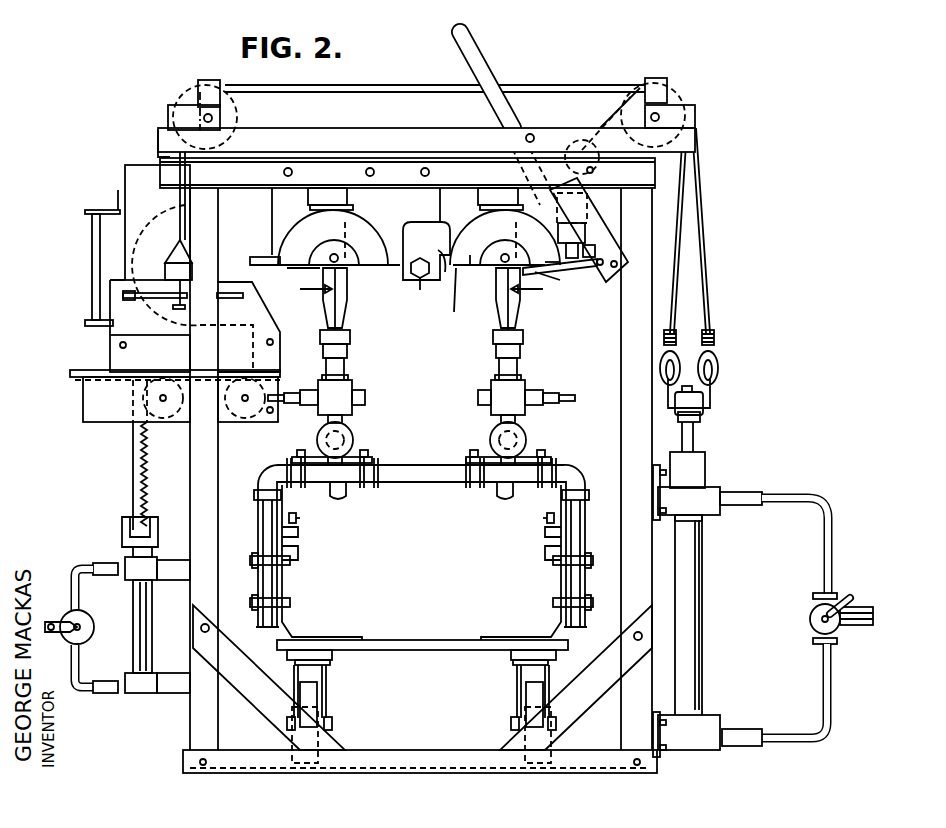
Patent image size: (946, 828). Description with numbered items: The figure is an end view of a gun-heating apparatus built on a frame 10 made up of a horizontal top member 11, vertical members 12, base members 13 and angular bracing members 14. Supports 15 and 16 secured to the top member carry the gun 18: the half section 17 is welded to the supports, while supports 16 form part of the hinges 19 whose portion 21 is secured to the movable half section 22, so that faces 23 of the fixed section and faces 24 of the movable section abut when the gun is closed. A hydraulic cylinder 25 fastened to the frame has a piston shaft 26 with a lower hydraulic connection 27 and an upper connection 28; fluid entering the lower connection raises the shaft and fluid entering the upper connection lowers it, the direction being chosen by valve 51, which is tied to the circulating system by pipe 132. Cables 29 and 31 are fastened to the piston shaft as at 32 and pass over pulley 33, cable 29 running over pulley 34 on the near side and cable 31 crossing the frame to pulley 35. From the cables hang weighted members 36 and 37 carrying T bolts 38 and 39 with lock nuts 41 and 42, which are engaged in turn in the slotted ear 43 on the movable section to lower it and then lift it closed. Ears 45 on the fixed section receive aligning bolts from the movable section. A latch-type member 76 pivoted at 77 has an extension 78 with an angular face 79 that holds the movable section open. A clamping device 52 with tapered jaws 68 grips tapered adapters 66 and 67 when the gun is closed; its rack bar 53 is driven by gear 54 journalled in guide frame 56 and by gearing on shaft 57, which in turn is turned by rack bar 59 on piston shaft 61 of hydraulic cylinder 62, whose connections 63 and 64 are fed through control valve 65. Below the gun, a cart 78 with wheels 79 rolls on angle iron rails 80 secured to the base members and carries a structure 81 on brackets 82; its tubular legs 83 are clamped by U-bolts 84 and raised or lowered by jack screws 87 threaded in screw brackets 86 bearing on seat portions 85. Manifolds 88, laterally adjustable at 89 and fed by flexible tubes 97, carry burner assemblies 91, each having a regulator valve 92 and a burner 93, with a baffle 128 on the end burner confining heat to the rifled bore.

The frame 10 is at (152, 131).
The horizontal top member 11 is at (454, 132).
The vertical members 12 is at (192, 478).
The base members 13 is at (412, 757).
The angular bracing members 14 is at (272, 700).
The supports 15 is at (297, 200).
The supports 16 is at (437, 204).
The half section 17 is at (295, 238).
The gun 18 is at (383, 226).
The hinges 19 is at (420, 284).
The hinge portion 21 is at (446, 270).
The half section 22 is at (518, 218).
The faces 23 is at (300, 272).
The faces 24 is at (480, 265).
The hydraulic cylinder 25 is at (703, 610).
The piston shaft 26 is at (700, 483).
The lower hydraulic connection 27 is at (780, 736).
The upper hydraulic connection 28 is at (786, 495).
The cable 29 is at (715, 352).
The cable 31 is at (282, 90).
The cable fastening 32 is at (705, 410).
The pulley 33 is at (690, 92).
The pulley 34 is at (592, 170).
The pulley 35 is at (197, 92).
The weighted member 36 is at (568, 225).
The weighted member 37 is at (165, 270).
The T bolt 38 is at (557, 263).
The T bolt 39 is at (160, 297).
The lock nut 41 is at (608, 280).
The lock nut 42 is at (180, 308).
The slotted ear 43 is at (585, 252).
The ears 45 is at (252, 261).
The valve 51 is at (812, 610).
The clamping device 52 is at (128, 166).
The rack bar 53 is at (72, 372).
The gear 54 is at (275, 378).
The guide frame 56 is at (118, 323).
The shaft 57 is at (148, 400).
The rack bar 59 is at (132, 466).
The piston shaft 61 is at (123, 540).
The hydraulic cylinder 62 is at (132, 612).
The inlet connection 63 is at (78, 564).
The outlet connection 64 is at (80, 690).
The control valve 65 is at (92, 636).
The tapered adapter 66 is at (345, 200).
The tapered adapter 67 is at (500, 188).
The tapered jaw 68 is at (228, 230).
The latch-type member 76 is at (490, 56).
The pivot 77 is at (533, 134).
The cart or dolly 78 is at (418, 640).
The rollers or wheels 79 is at (318, 690).
The angle iron rails 80 is at (290, 752).
The structure 81 is at (432, 457).
The brackets 82 is at (284, 585).
The tubular legs 83 is at (258, 542).
The U-bolts and nuts 84 is at (255, 600).
The seat portions 85 is at (298, 555).
The screw brackets 86 is at (300, 533).
The jack screws 87 is at (297, 517).
The manifold members 88 is at (352, 436).
The lateral adjustment mounting 89 is at (375, 460).
The gas burner assemblies 91 is at (320, 427).
The regulator valve 92 is at (360, 397).
The burner 93 is at (322, 300).
The flexible tubes 97 is at (345, 492).
The baffle 128 is at (348, 245).
The pipe 132 is at (45, 620).